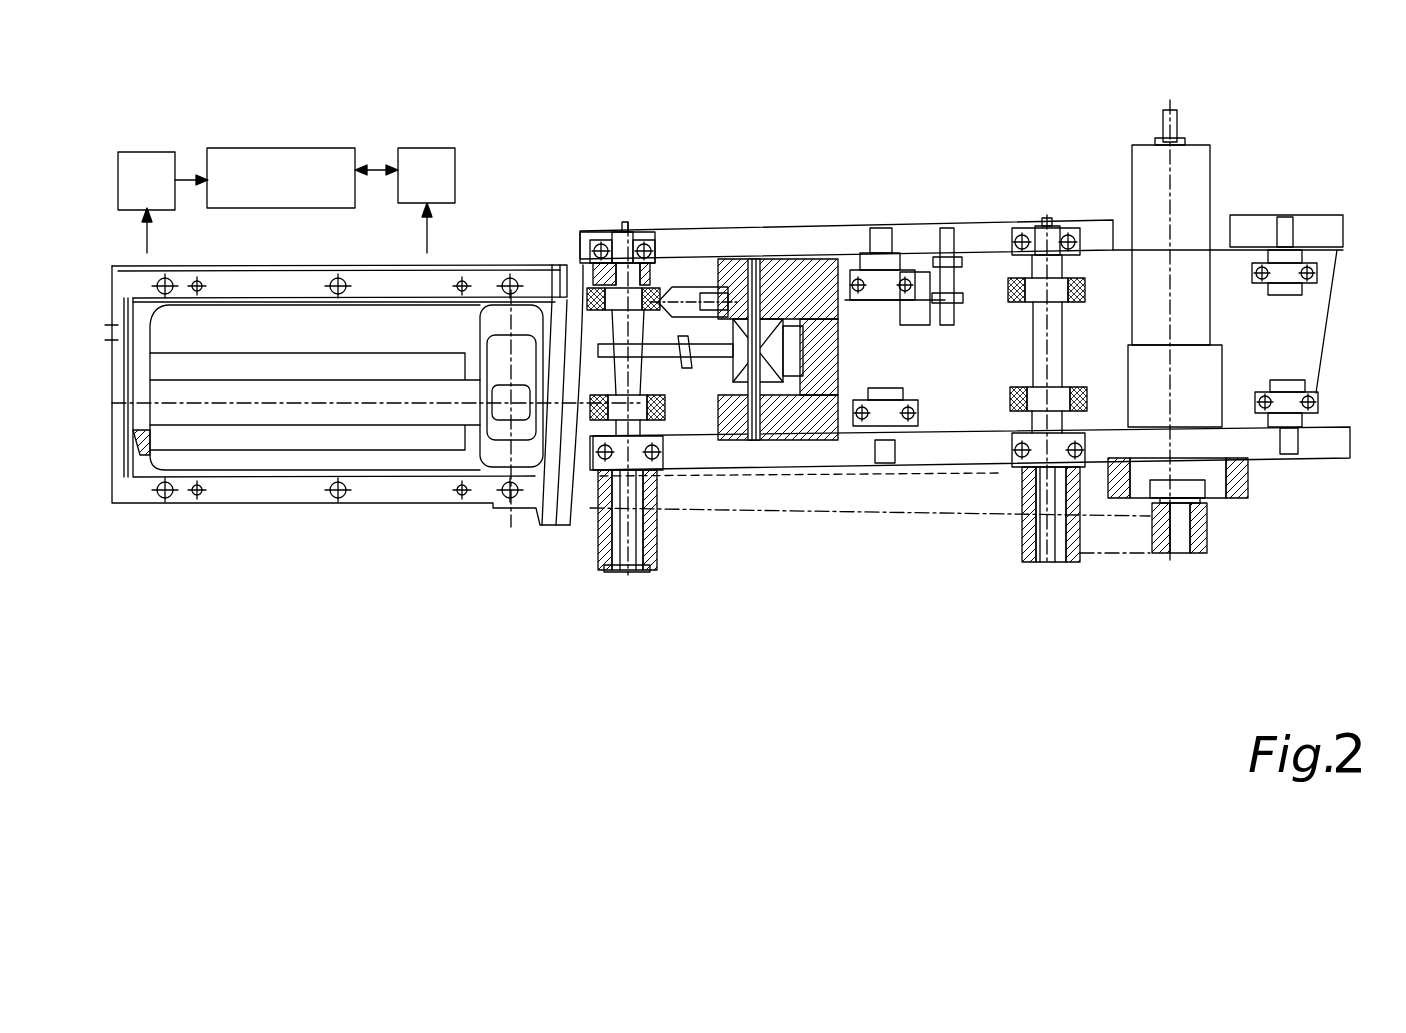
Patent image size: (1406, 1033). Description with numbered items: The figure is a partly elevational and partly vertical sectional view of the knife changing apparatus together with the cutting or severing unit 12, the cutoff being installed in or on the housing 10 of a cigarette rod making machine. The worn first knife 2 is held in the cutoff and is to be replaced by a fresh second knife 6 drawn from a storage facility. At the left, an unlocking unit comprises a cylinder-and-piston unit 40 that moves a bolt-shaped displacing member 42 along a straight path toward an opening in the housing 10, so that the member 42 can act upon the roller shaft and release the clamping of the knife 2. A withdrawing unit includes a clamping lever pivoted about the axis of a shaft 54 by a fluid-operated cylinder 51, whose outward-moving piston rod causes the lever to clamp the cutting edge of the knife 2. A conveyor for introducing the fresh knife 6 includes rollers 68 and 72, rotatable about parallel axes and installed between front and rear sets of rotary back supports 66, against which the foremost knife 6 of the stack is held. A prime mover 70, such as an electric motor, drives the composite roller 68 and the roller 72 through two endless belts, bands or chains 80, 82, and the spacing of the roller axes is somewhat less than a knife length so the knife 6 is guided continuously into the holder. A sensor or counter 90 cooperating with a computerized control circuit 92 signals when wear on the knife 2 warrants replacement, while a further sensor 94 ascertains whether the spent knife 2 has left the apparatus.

The first knife 2 is at (592, 335).
The second knife 6 is at (1300, 337).
The housing 10 is at (390, 488).
The cutting or severing unit 12 is at (150, 462).
The cylinder-and-piston unit 40 is at (767, 397).
The displacing member 42 is at (655, 352).
The fluid-operated cylinder 51 is at (855, 305).
The shaft 54 is at (627, 583).
The rotary back supports 66 is at (905, 300).
The roller 68 is at (1008, 300).
The prime mover 70 is at (1187, 210).
The roller 72 is at (668, 318).
The endless belt 80 is at (1113, 543).
The endless belt 82 is at (867, 490).
The sensor or counter 90 is at (422, 158).
The computerized control circuit 92 is at (243, 157).
The sensor 94 is at (140, 160).